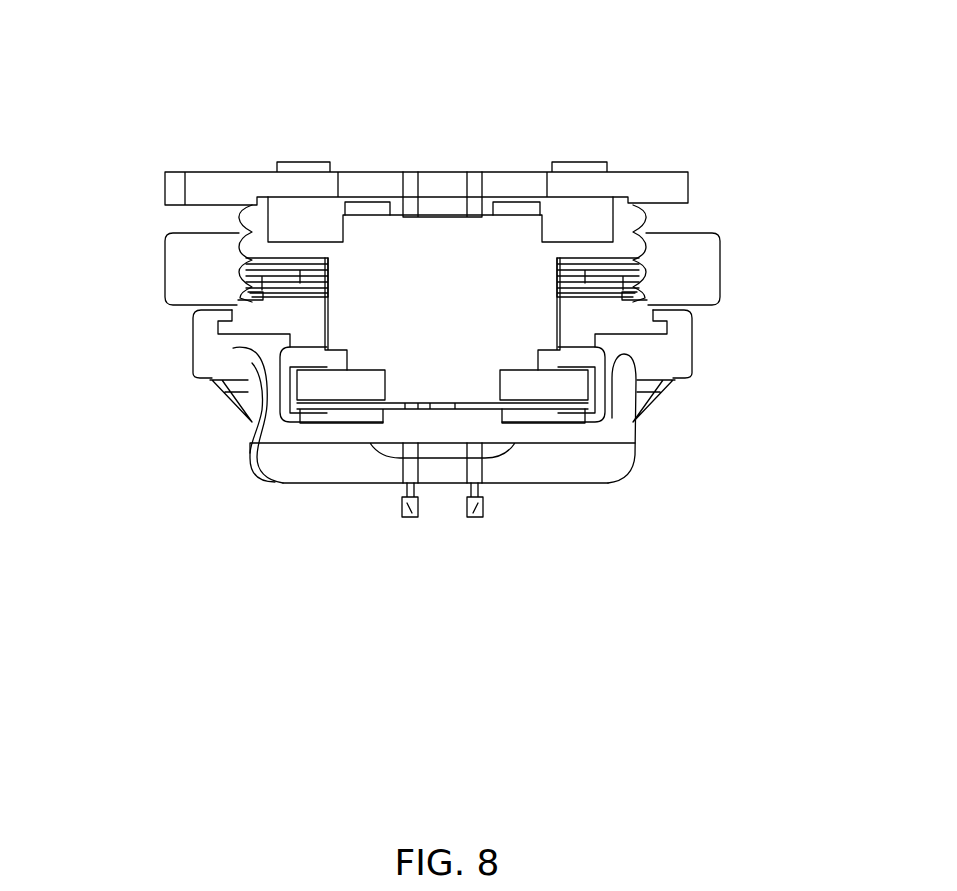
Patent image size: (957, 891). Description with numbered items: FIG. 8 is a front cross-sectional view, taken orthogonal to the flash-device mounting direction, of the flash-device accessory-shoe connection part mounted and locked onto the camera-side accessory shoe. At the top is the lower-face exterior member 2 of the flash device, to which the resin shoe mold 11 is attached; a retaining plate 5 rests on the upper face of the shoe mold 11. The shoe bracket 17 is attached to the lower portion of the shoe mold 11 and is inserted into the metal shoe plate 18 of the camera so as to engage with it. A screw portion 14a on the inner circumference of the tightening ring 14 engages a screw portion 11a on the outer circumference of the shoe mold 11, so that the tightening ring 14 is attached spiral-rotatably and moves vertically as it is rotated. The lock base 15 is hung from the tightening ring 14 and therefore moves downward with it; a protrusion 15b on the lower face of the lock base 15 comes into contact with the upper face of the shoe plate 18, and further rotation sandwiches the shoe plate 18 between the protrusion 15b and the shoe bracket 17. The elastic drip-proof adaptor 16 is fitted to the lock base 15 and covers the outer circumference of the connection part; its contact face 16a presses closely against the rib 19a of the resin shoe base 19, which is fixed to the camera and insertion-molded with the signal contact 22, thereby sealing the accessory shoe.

The lower-face exterior member 2 is at (643, 178).
The retaining plate 5 is at (388, 225).
The shoe mold 11 is at (350, 272).
The screw portion 11a is at (248, 272).
The tightening ring 14 is at (693, 258).
The screw portion 14a is at (242, 252).
The lock base 15 is at (603, 323).
The protrusion 15b is at (207, 347).
The drip-proof adaptor 16 is at (203, 326).
The contact face 16a is at (247, 348).
The shoe bracket 17 is at (343, 388).
The shoe plate 18 is at (335, 438).
The shoe base 19 is at (510, 437).
The rib 19a is at (248, 420).
The signal contact 22 is at (410, 508).